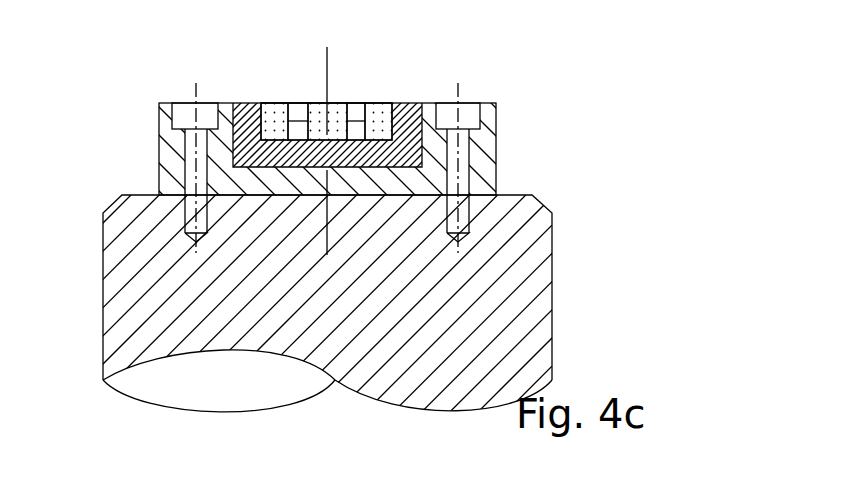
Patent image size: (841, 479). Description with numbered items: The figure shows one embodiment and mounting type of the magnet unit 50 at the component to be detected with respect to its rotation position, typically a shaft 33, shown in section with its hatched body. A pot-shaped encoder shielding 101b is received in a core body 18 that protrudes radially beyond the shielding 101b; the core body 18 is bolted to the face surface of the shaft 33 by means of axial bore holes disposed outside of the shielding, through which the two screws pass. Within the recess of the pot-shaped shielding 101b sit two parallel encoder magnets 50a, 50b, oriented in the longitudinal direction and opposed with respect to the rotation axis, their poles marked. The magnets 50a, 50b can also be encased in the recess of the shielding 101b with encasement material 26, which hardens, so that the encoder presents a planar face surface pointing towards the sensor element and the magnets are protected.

The core body 18 is at (167, 132).
The encasement material 26 is at (277, 113).
The shaft 33 is at (112, 372).
The magnet unit 50 is at (583, 142).
The encoder magnet 50a is at (298, 118).
The encoder magnet 50b is at (355, 113).
The pot-shaped shielding 101b is at (240, 163).